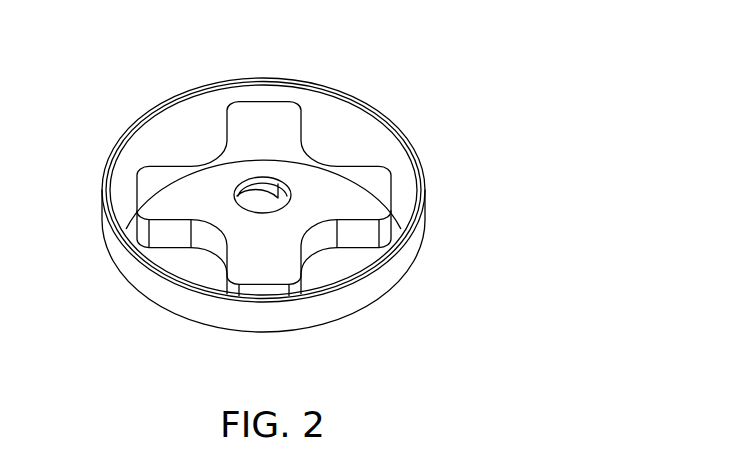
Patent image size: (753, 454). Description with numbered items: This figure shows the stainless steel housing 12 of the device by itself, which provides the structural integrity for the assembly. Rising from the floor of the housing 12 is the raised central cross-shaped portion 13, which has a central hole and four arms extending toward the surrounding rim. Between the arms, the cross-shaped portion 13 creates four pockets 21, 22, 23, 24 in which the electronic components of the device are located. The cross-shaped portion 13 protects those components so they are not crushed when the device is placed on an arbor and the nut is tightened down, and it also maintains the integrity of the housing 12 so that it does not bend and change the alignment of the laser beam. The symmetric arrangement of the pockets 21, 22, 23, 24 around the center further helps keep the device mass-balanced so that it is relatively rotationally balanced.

The housing 12 is at (248, 77).
The raised central cross-shaped portion 13 is at (274, 123).
The pocket 21 is at (187, 145).
The pocket 22 is at (186, 267).
The pocket 23 is at (325, 268).
The pocket 24 is at (342, 150).